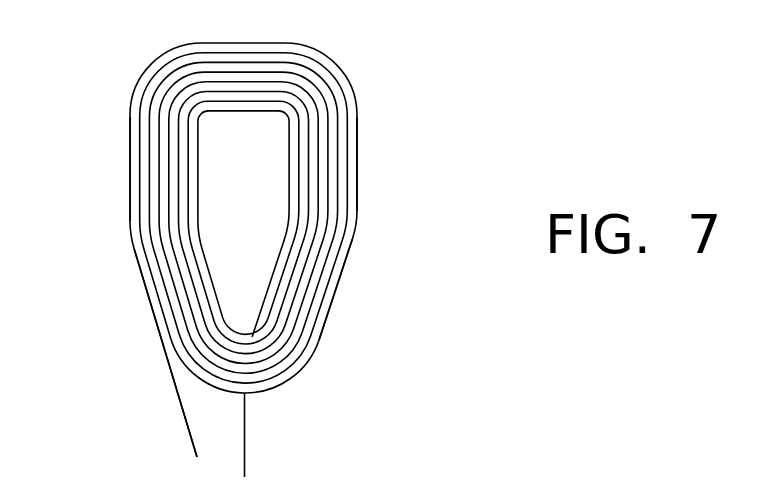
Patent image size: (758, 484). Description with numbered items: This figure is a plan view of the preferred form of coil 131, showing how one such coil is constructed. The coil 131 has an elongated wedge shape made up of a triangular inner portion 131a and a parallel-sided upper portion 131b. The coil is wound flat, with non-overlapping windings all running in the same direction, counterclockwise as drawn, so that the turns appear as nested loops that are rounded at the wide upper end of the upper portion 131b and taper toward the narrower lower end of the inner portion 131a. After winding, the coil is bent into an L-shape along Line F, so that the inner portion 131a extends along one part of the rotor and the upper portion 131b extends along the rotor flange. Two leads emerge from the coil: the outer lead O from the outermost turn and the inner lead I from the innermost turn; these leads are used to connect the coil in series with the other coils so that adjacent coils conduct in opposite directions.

The coil 131 is at (153, 63).
The triangular inner portion 131a is at (318, 340).
The parallel-sided upper portion 131b is at (128, 122).
The Line F is at (356, 228).
The outer lead O is at (180, 408).
The inner lead I is at (246, 428).